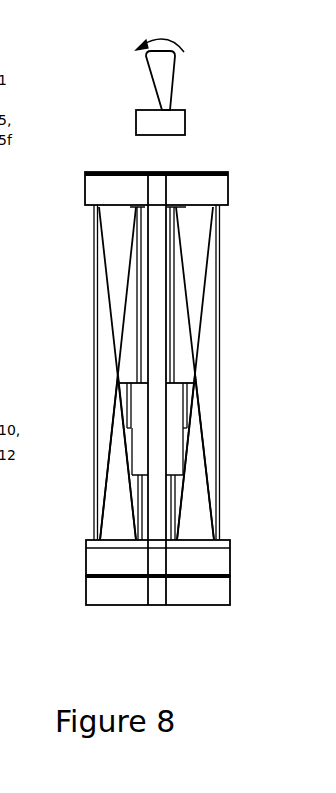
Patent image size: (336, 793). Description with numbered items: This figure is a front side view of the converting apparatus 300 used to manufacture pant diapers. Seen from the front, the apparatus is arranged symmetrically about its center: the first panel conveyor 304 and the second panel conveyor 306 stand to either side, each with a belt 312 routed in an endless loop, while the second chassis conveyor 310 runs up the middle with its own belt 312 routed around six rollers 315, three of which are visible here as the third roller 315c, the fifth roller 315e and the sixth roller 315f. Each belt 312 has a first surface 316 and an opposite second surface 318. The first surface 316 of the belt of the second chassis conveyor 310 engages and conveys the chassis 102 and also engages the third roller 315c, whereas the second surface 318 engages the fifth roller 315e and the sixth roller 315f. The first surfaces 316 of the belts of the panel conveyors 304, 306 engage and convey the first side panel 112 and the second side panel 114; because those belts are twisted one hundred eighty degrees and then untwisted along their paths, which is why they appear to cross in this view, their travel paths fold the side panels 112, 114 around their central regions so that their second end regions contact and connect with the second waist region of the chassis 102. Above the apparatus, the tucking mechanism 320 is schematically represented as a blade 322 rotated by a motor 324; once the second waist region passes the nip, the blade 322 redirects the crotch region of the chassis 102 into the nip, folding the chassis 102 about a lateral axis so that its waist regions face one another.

The converting apparatus 300 is at (198, 610).
The tucking mechanism 320 is at (172, 108).
The blade 322 is at (160, 75).
The motor 324 is at (205, 51).
The rollers 315 is at (208, 193).
The sixth roller 315f is at (175, 170).
The third roller 315c is at (124, 558).
The fifth roller 315e is at (129, 613).
The first surface 316 is at (106, 213).
The belt 312 is at (168, 390).
The second panel conveyor 306 is at (112, 268).
The first panel conveyor 304 is at (198, 253).
The second chassis conveyor 310 is at (148, 278).
The second side panel 114 is at (117, 384).
The first side panel 112 is at (200, 384).
The chassis 102 is at (172, 445).
The second surface 318 is at (115, 504).